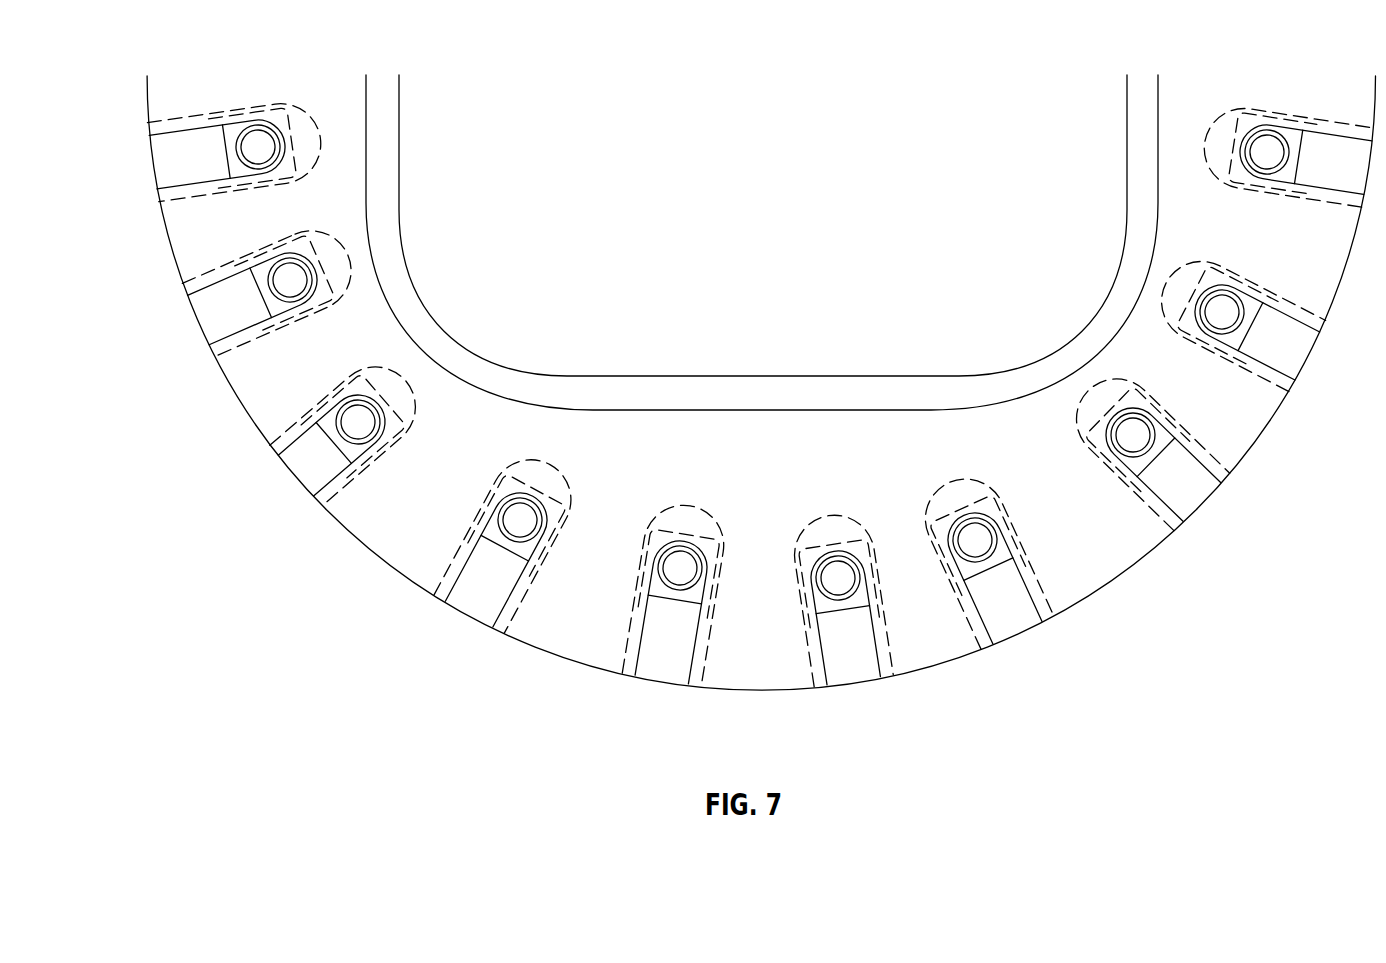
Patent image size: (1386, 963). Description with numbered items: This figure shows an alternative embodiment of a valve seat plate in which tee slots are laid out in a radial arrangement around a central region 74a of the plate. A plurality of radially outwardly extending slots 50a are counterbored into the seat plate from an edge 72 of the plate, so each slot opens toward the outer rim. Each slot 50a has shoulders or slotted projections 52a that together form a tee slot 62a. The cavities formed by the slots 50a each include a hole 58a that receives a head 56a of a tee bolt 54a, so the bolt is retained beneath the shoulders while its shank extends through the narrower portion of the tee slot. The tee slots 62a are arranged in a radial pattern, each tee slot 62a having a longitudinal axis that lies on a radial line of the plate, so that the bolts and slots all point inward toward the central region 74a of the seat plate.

The slot 50a is at (163, 165).
The slotted projection 52a is at (190, 295).
The tee bolt 54a is at (293, 250).
The head 56a is at (332, 287).
The hole 58a is at (252, 323).
The tee slot 62a is at (325, 232).
The edge 72 is at (587, 663).
The inner track 74a is at (782, 110).